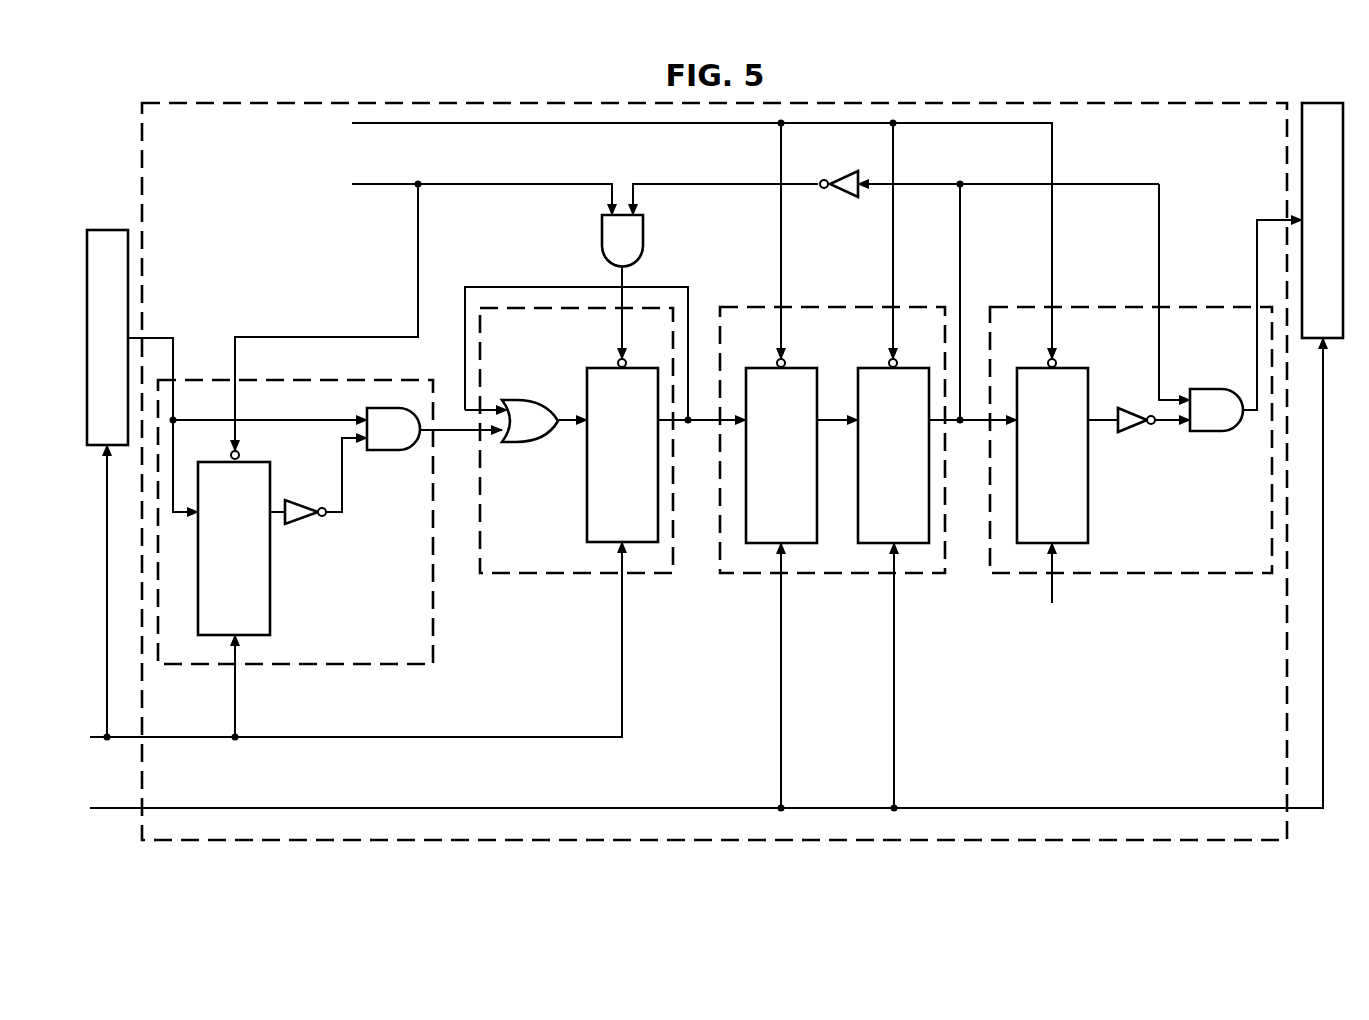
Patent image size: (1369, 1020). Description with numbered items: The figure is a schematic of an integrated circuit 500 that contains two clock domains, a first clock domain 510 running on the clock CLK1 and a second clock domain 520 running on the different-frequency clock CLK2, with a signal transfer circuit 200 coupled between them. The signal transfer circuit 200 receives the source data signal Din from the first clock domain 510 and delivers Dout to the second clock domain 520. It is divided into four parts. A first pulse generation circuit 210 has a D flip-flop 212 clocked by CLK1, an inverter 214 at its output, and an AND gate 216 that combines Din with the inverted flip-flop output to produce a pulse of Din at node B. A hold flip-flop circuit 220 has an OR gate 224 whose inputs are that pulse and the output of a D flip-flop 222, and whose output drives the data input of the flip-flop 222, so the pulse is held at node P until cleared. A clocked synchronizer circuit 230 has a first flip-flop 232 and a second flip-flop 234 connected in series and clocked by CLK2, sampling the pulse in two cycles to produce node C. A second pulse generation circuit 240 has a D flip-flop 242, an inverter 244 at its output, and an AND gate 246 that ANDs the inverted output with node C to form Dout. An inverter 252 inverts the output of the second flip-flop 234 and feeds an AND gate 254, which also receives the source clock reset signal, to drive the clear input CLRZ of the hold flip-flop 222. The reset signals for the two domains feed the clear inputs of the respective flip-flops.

The integrated circuit 500 is at (118, 82).
The first clock domain 510 is at (105, 230).
The second clock domain 520 is at (1325, 103).
The signal transfer circuit 200 is at (1128, 103).
The first pulse generation circuit 210 is at (210, 668).
The D flip-flop 212 is at (272, 578).
The inverter 214 is at (304, 526).
The AND gate 216 is at (396, 452).
The hold flip-flop circuit 220 is at (540, 578).
The D flip-flop 222 is at (598, 366).
The OR gate 224 is at (525, 398).
The clocked synchronizer circuit 230 is at (918, 578).
The first flip-flop 232 is at (798, 366).
The second flip-flop 234 is at (876, 366).
The second pulse generation circuit 240 is at (1193, 578).
The D flip-flop 242 is at (1090, 480).
The inverter 244 is at (1142, 432).
The AND gate 246 is at (1216, 433).
The inverter 252 is at (836, 180).
The AND gate 254 is at (602, 238).